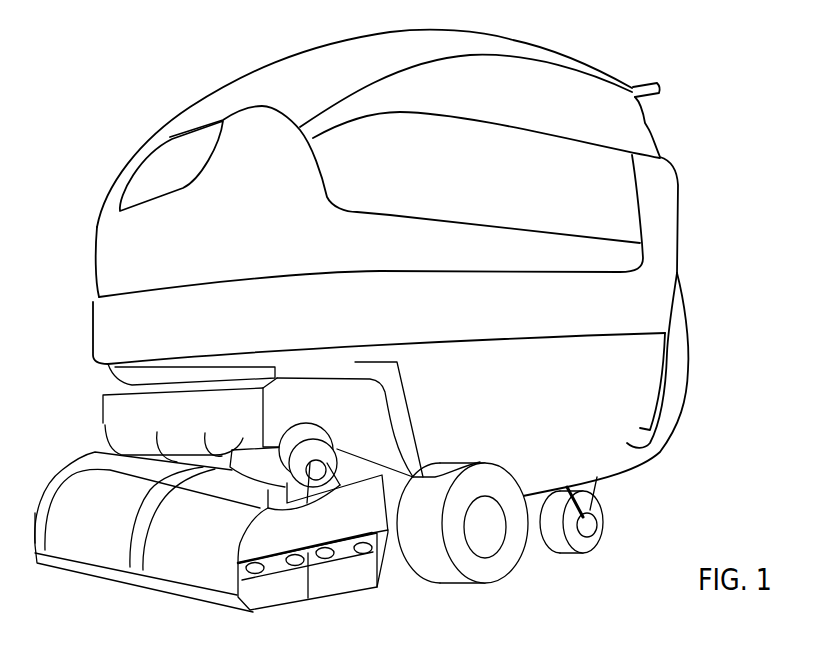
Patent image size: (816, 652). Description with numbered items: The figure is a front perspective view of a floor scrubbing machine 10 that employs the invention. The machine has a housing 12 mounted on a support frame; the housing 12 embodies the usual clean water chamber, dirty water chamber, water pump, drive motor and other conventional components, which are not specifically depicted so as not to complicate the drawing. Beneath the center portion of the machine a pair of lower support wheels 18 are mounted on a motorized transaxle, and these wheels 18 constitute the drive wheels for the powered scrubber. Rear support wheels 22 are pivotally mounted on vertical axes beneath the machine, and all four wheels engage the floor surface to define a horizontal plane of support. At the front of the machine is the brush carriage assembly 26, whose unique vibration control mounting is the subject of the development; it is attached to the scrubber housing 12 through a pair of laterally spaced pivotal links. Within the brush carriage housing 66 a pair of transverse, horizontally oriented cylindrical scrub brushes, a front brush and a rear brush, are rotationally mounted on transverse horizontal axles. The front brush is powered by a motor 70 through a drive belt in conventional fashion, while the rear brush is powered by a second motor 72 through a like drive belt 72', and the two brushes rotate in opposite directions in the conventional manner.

The floor scrubbing machine 10 is at (391, 326).
The housing 12 is at (620, 202).
The lower support wheels 18 is at (445, 577).
The rear support wheels 22 is at (563, 547).
The brush carriage assembly 26 is at (211, 536).
The brush carriage housing 66 is at (170, 560).
The motor 70 is at (137, 441).
The motor 72 is at (285, 463).
The drive belt 72' is at (313, 542).